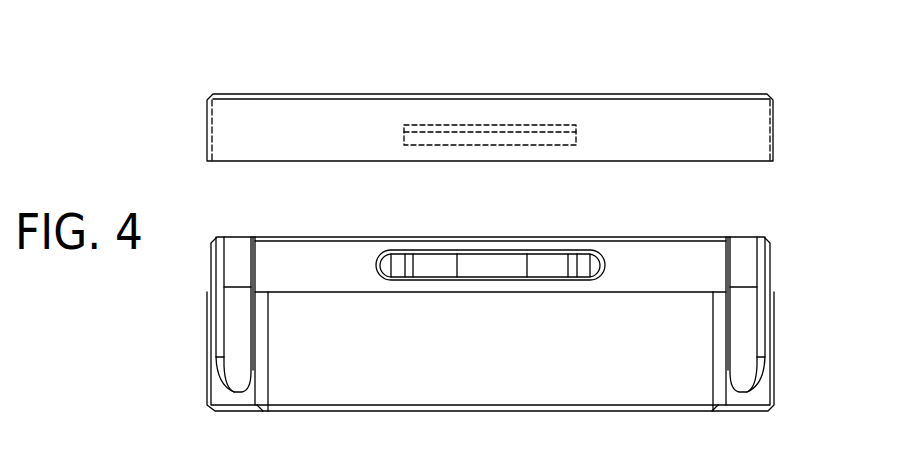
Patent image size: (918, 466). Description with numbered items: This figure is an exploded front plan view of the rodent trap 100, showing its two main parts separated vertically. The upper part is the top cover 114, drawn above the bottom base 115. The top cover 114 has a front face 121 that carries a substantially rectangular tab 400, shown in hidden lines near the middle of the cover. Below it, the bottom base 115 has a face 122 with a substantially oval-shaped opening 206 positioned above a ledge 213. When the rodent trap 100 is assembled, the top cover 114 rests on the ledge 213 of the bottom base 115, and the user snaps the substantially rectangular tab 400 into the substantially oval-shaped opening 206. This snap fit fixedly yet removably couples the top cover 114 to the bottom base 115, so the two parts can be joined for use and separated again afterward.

The rodent trap 100 is at (585, 61).
The top cover 114 is at (757, 89).
The bottom base 115 is at (784, 258).
The front face 121 is at (694, 148).
The face 122 is at (509, 358).
The substantially oval-shaped opening 206 is at (492, 258).
The ledge 213 is at (627, 291).
The substantially rectangular tab 400 is at (430, 124).